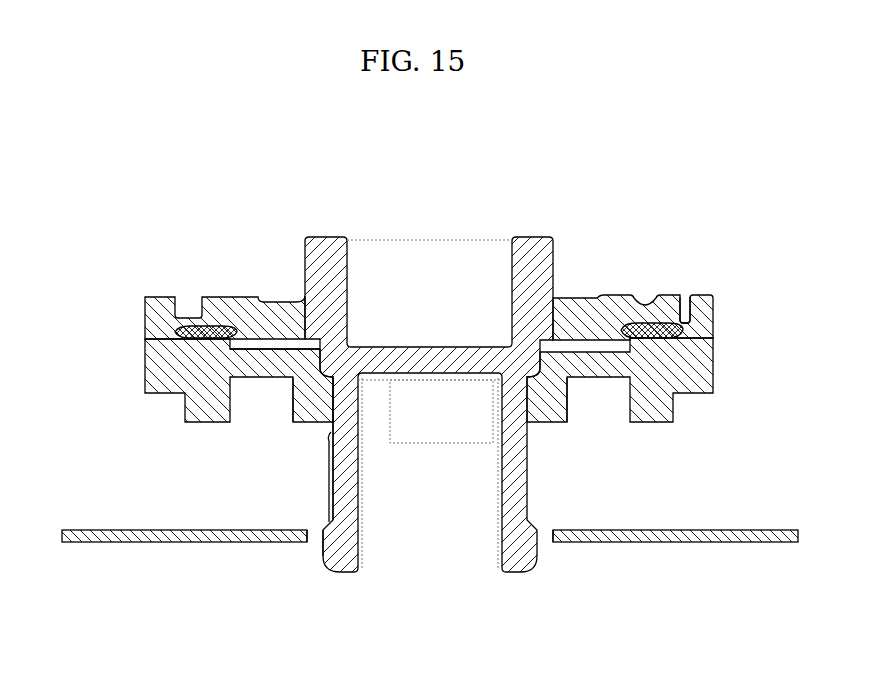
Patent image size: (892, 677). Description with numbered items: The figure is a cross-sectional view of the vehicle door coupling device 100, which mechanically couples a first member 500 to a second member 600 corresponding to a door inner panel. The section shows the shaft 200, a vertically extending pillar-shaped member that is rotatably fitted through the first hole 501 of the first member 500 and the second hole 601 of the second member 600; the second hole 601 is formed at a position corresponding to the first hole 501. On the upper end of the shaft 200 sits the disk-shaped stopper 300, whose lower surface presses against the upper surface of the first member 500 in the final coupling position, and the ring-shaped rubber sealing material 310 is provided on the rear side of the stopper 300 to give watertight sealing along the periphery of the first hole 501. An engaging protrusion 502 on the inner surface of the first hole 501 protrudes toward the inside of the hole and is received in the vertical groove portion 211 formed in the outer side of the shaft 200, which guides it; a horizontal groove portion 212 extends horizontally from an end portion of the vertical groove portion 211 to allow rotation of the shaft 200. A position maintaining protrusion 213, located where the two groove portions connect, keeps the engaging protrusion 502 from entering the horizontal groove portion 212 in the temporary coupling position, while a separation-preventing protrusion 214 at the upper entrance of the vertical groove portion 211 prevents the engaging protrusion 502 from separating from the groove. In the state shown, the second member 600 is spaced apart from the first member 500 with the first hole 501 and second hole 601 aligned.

The vehicle door coupling device 100 is at (636, 202).
The shaft 200 is at (532, 237).
The vertical groove portion 211 is at (330, 487).
The horizontal groove portion 212 is at (292, 384).
The position maintaining protrusion 213 is at (533, 440).
The separation-preventing protrusion 214 is at (323, 548).
The stopper 300 is at (617, 296).
The sealing material 310 is at (715, 308).
The first member 500 is at (713, 363).
The first hole 501 is at (328, 358).
The engaging protrusion 502 is at (330, 440).
The second member 600 is at (774, 545).
The through hole 601 is at (542, 545).